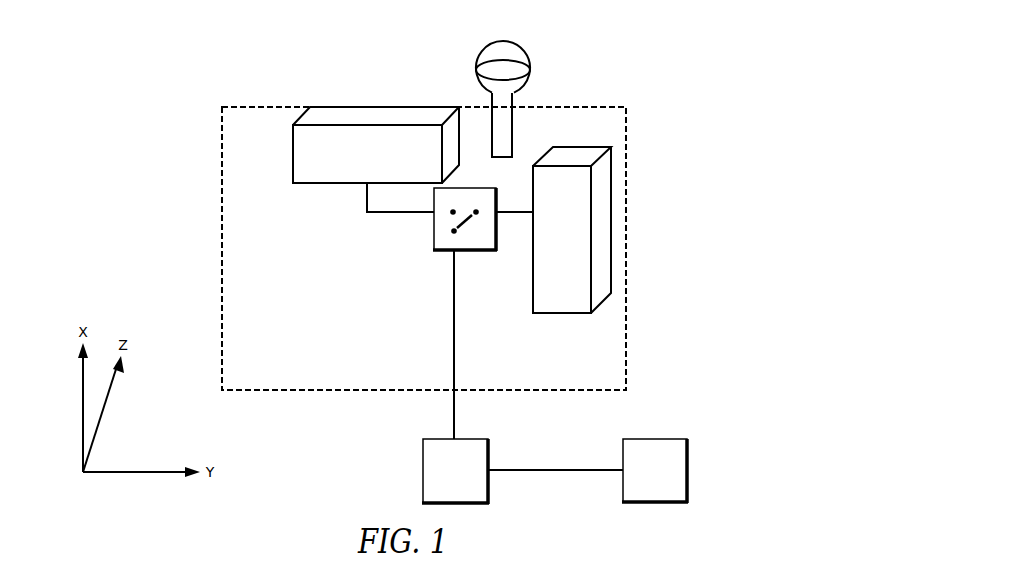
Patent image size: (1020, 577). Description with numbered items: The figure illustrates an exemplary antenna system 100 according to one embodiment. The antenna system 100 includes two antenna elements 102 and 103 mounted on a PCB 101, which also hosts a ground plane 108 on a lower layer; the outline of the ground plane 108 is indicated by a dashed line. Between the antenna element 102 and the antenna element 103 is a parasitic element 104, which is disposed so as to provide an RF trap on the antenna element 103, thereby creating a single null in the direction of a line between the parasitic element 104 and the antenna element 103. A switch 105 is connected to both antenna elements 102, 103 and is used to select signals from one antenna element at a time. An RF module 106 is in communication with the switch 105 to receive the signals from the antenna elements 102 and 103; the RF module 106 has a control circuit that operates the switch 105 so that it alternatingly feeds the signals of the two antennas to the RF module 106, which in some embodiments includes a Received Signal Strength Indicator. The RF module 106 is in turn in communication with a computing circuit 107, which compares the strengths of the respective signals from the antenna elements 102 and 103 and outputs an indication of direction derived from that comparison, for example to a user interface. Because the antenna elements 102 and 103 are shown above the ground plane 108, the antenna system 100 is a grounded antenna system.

The antenna system 100 is at (632, 70).
The PCB 101 is at (280, 373).
The antenna element 102 is at (387, 108).
The antenna element 103 is at (608, 238).
The parasitic element 104 is at (509, 44).
The switch 105 is at (434, 240).
The RF module 106 is at (423, 471).
The computing circuit 107 is at (690, 470).
The ground plane 108 is at (410, 334).